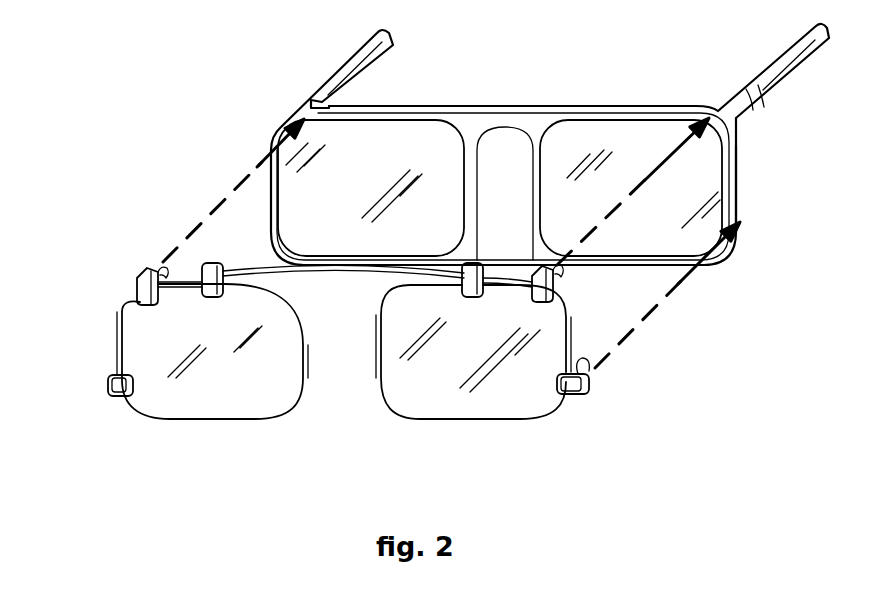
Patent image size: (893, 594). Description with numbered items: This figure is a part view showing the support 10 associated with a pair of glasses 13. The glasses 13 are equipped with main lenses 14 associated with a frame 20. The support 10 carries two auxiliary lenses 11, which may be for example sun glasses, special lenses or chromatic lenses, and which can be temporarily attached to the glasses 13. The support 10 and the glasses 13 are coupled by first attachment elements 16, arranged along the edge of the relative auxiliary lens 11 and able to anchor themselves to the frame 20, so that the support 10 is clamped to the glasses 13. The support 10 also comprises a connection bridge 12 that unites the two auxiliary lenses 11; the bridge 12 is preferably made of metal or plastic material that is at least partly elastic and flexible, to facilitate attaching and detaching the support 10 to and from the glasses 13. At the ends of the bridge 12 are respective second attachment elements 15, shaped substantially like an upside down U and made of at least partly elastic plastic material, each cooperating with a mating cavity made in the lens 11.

The support 10 is at (352, 337).
The auxiliary lenses 11 is at (247, 417).
The connection bridge 12 is at (342, 279).
The pair of glasses 13 is at (290, 94).
The main lenses 14 is at (380, 128).
The second attachment elements 15 is at (206, 250).
The first attachment elements 16 is at (130, 256).
The frame 20 is at (748, 174).